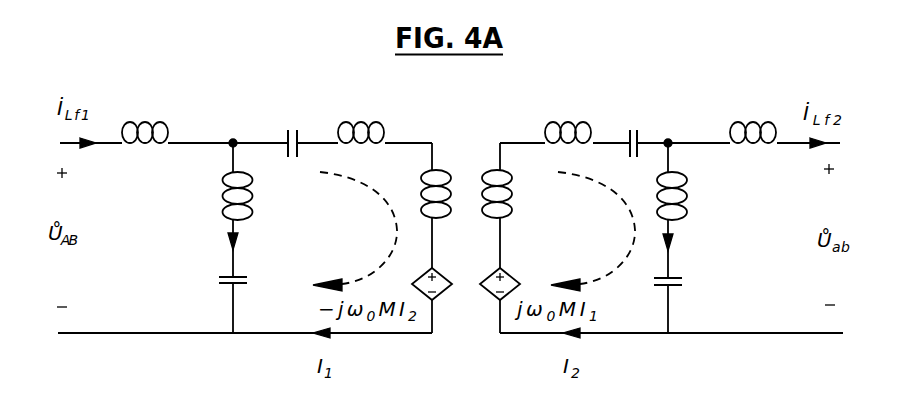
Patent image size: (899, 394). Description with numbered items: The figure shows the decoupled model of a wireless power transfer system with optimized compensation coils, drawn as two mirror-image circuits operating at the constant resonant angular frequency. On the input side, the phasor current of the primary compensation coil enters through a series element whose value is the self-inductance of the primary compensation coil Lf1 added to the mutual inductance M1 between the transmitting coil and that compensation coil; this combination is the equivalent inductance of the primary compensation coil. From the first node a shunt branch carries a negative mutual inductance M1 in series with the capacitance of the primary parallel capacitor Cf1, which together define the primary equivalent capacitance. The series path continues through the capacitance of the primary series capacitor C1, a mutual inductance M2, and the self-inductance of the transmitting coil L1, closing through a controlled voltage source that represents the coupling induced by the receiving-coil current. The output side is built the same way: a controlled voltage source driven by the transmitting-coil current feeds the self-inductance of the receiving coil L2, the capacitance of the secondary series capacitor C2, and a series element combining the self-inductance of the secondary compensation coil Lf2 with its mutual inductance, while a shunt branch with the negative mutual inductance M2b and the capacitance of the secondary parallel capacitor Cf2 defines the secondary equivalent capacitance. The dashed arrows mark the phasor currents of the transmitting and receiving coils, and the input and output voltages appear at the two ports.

The self-inductance of the primary compensation coil Lf1 is at (147, 115).
The capacitance of the primary series capacitor C1 is at (294, 125).
The mutual inductance between the receiving coil and the secondary compensation coil M2 is at (464, 114).
The self-inductance of the transmitting coil L1 is at (421, 194).
The mutual inductance between the transmitting coil and the primary compensation coi M1 is at (206, 196).
The capacitance of the primary parallel capacitor Cf1 is at (212, 277).
The self-inductance of the receiving coil L2 is at (510, 194).
The capacitance of the secondary series capacitor C2 is at (630, 125).
The self-inductance of the secondary compensation coil Lf2 is at (741, 115).
The negative mutual inductance of the secondary compensation coil M2b is at (702, 196).
The capacitance of the secondary parallel capacitor Cf2 is at (689, 282).